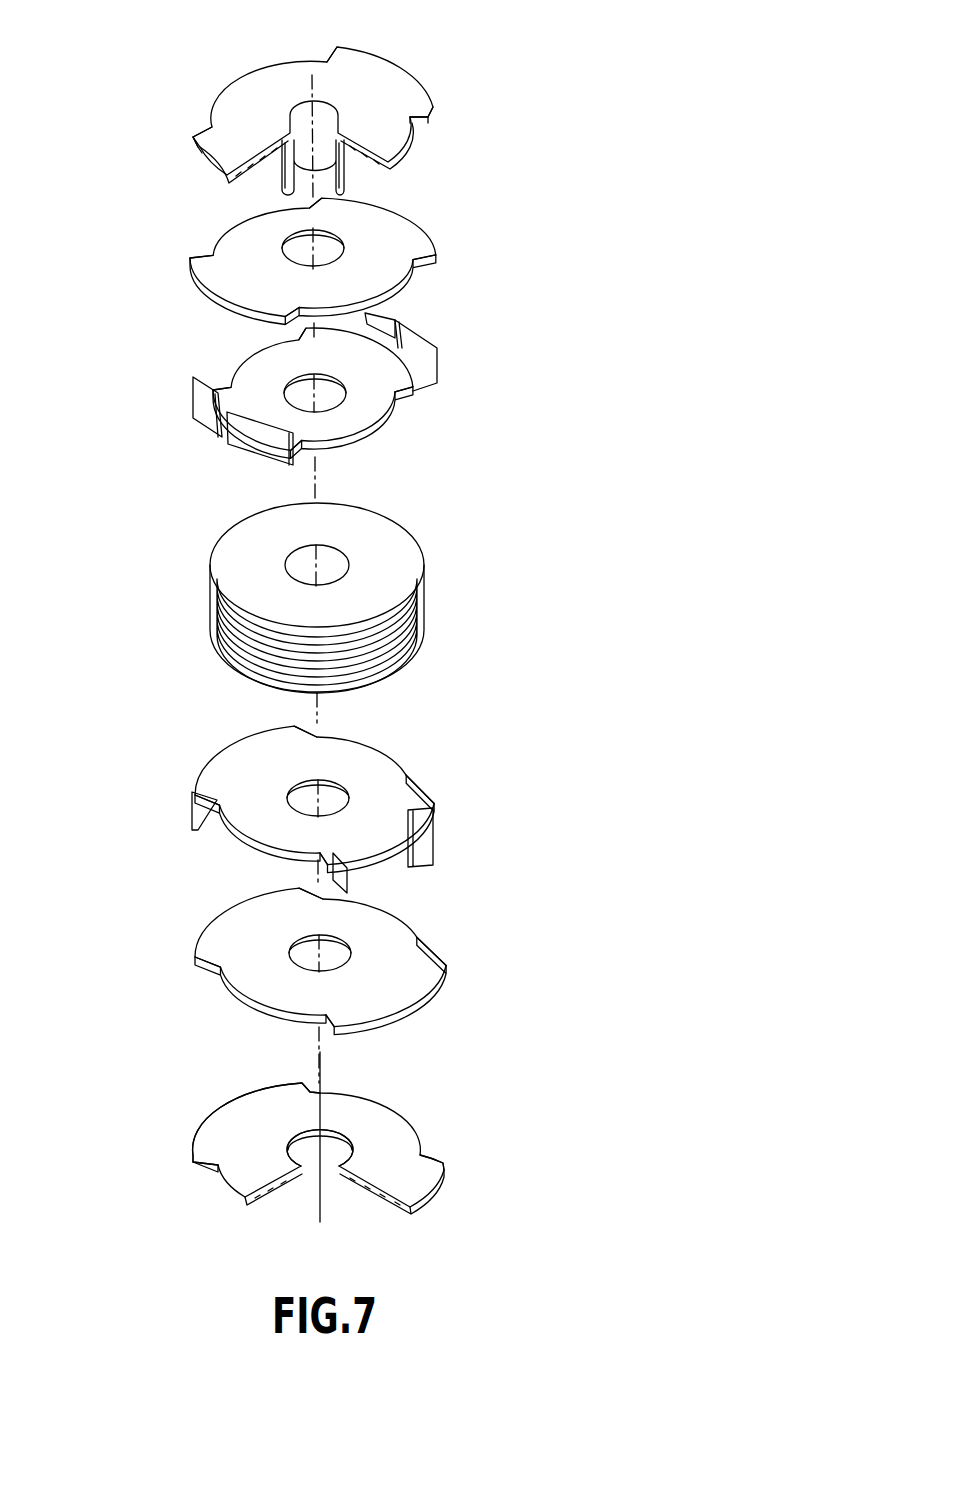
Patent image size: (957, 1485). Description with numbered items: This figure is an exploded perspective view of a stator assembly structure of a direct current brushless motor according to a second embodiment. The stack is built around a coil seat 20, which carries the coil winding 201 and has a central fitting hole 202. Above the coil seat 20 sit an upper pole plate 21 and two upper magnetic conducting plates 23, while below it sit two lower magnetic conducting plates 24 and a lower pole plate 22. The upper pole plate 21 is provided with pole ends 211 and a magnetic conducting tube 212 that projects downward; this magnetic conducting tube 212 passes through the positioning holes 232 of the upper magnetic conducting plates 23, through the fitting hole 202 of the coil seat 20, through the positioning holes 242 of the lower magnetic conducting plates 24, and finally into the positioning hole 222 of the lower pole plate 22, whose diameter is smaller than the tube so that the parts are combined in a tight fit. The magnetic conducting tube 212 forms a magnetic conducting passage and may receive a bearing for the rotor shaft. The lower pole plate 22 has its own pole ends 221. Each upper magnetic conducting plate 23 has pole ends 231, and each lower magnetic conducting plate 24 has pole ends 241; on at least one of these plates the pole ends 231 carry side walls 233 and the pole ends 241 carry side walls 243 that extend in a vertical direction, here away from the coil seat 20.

The coil seat 20 is at (351, 582).
The coil winding 201 is at (407, 627).
The fitting hole 202 is at (300, 563).
The upper pole plate 21 is at (318, 123).
The pole ends 211 is at (196, 150).
The magnetic conducting tube 212 is at (345, 160).
The lower pole plate 22 is at (321, 1159).
The pole ends 221 is at (202, 1128).
The positioning hole 222 is at (327, 1165).
The upper magnetic conducting plate 23 is at (336, 364).
The pole ends 231 is at (198, 297).
The positioning hole 232 is at (387, 275).
The side walls 233 is at (438, 360).
The lower magnetic conducting plate 24 is at (321, 866).
The pole ends 241 is at (233, 742).
The positioning hole 242 is at (335, 795).
The side walls 243 is at (187, 813).